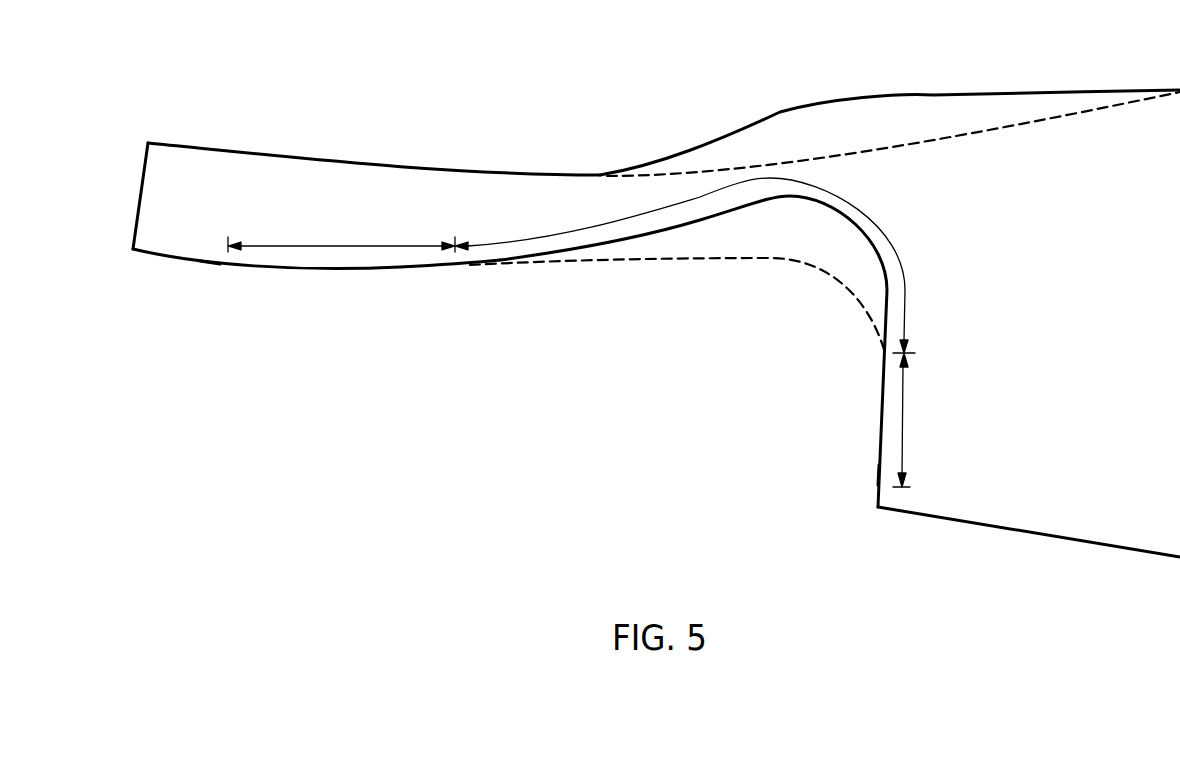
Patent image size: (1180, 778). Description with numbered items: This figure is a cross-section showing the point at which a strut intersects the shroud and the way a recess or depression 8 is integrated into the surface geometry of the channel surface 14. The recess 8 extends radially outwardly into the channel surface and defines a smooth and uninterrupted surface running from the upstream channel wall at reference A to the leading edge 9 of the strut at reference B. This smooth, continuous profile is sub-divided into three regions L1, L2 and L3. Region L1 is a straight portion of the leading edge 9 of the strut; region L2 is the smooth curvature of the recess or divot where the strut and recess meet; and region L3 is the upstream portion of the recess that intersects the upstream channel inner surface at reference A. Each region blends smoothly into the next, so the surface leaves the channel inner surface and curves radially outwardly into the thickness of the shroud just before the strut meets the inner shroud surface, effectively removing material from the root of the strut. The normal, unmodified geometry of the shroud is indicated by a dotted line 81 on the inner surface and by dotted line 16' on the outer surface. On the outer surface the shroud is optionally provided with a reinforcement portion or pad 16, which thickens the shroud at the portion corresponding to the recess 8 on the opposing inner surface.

The channel surface 14 is at (163, 255).
The outer reinforcement portion or pad 16 is at (890, 112).
The normal geometry of the shroud outer surface 16' is at (893, 112).
The recess or depression 8 is at (650, 237).
The initial position of flange 81 is at (770, 258).
The leading edge 9 is at (898, 492).
The upstream channel wall reference point A is at (210, 263).
The strut leading edge reference point B is at (878, 475).
The region L1 is at (916, 420).
The region L2 is at (685, 265).
The region L3 is at (341, 231).